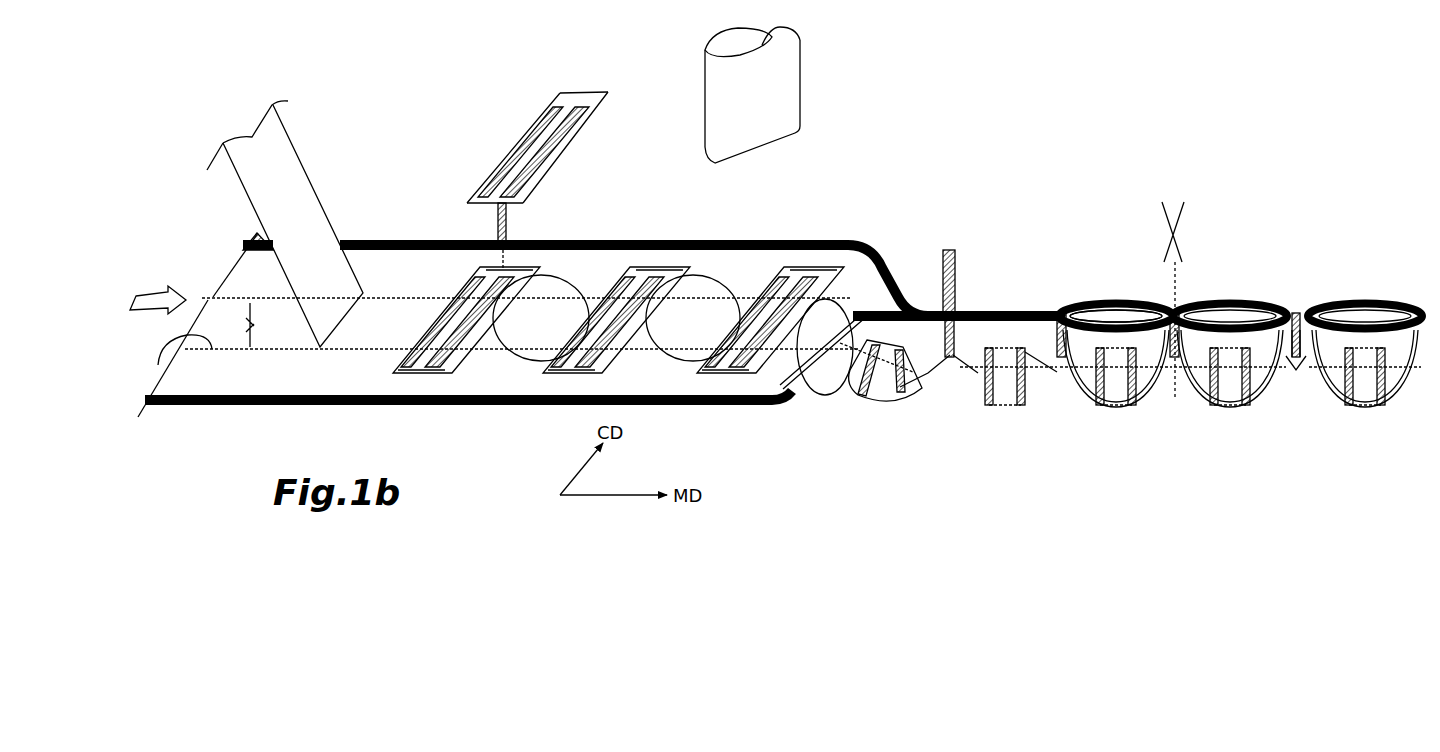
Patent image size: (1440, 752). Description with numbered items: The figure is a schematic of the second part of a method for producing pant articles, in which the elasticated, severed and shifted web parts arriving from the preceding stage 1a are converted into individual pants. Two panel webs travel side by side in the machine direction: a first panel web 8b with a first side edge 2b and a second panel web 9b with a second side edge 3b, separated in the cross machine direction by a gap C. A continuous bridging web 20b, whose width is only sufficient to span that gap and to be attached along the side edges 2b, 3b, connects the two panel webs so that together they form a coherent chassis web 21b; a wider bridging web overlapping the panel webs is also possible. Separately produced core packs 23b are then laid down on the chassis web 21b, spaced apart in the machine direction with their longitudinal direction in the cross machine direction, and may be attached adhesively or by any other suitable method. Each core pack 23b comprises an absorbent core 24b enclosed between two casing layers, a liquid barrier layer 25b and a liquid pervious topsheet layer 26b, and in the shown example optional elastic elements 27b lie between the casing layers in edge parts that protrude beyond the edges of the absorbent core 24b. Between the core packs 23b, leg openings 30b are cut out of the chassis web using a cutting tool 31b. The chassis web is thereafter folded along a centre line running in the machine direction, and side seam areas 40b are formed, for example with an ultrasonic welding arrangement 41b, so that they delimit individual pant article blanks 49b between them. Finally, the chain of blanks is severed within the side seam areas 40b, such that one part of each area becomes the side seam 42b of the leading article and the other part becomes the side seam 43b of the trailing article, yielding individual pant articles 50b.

The web feed direction 1a is at (158, 285).
The first side edge 2b is at (202, 300).
The second side edge 3b is at (182, 343).
The first panel web 8b is at (373, 260).
The second panel web 9b is at (258, 396).
The continuous bridging web 20b is at (297, 200).
The coherent chassis web 21b is at (400, 227).
The core pack 23b is at (551, 149).
The absorbent core 24b is at (567, 93).
The liquid barrier layer 25b is at (530, 117).
The liquid pervious topsheet layer 26b is at (570, 118).
The elastic elements 27b is at (513, 147).
The leg openings 30b is at (703, 280).
The cutting tool 31b is at (778, 90).
The side seam areas 40b is at (957, 335).
The ultrasonic welding arrangement 41b is at (940, 287).
The side seam 42b is at (1297, 313).
The side seam 43b is at (1297, 358).
The pant article blanks 49b is at (1117, 303).
The pant articles 50b is at (1232, 287).
The gap dimension C is at (273, 280).